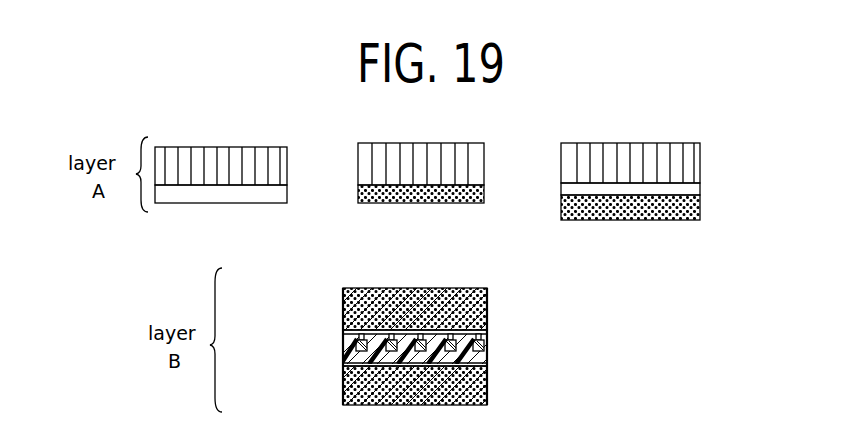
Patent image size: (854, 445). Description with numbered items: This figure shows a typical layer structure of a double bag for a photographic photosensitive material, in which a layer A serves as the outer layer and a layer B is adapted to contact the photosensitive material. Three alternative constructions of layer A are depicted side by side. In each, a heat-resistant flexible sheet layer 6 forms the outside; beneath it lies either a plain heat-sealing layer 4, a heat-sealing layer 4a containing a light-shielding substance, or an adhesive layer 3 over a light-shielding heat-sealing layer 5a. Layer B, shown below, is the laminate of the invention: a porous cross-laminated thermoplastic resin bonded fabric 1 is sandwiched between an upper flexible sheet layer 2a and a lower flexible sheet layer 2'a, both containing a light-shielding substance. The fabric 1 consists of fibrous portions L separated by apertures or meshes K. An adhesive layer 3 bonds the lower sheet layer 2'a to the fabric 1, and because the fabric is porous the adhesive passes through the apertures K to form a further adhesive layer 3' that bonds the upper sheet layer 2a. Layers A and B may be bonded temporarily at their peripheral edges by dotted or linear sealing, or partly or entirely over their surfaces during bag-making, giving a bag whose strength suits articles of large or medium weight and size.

The heat-resistant flexible sheet layer 6 is at (278, 160).
The heat-sealing layer 4 is at (277, 197).
The heat-sealing layer containing a light-shielding substance 4a is at (480, 197).
The adhesive layer 3 is at (518, 290).
The heat-sealing layer containing a light-shielding substance 5a is at (697, 218).
The flexible sheet layer containing a light-shielding substance 2a is at (478, 305).
The flexible sheet layer containing a light-shielding substance 2'a is at (424, 383).
The adhesive layer formed through the apertures 3' is at (392, 318).
The thermoplastic resin bonded fabric 1 is at (488, 350).
The apertures or meshes in the fabric K is at (342, 342).
The fibrous portion of the fabric L is at (487, 347).